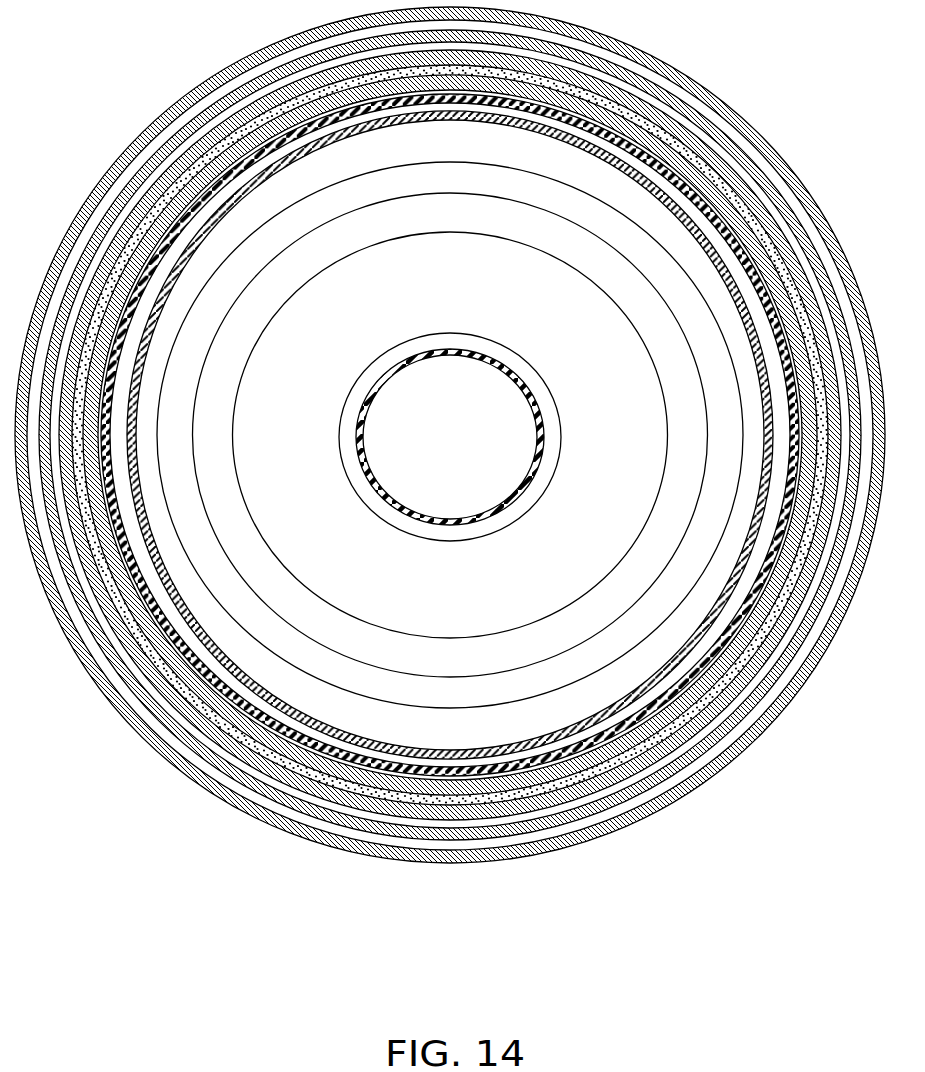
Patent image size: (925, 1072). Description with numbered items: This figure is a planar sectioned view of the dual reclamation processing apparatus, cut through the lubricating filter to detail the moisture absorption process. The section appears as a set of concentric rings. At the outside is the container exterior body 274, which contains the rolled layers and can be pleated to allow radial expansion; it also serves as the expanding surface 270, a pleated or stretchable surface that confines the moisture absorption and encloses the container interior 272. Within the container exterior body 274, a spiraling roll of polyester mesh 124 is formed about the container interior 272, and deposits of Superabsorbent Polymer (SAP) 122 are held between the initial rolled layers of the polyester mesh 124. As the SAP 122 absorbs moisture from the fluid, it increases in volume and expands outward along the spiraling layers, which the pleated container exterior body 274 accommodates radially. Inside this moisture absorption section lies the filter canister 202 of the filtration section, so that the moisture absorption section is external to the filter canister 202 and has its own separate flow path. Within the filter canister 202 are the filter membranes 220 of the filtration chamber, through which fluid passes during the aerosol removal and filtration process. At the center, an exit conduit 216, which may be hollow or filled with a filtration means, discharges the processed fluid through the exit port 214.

The expanding surface 270 is at (450, 435).
The container exterior body 274 is at (167, 758).
The polyester mesh 124 is at (763, 250).
The Superabsorbent Polymer (SAP) 122 is at (729, 191).
The container interior 272 is at (240, 697).
The filter canister 202 is at (625, 702).
The filter membranes 220 is at (472, 228).
The exit port 214 is at (391, 467).
The exit conduit 216 is at (528, 477).